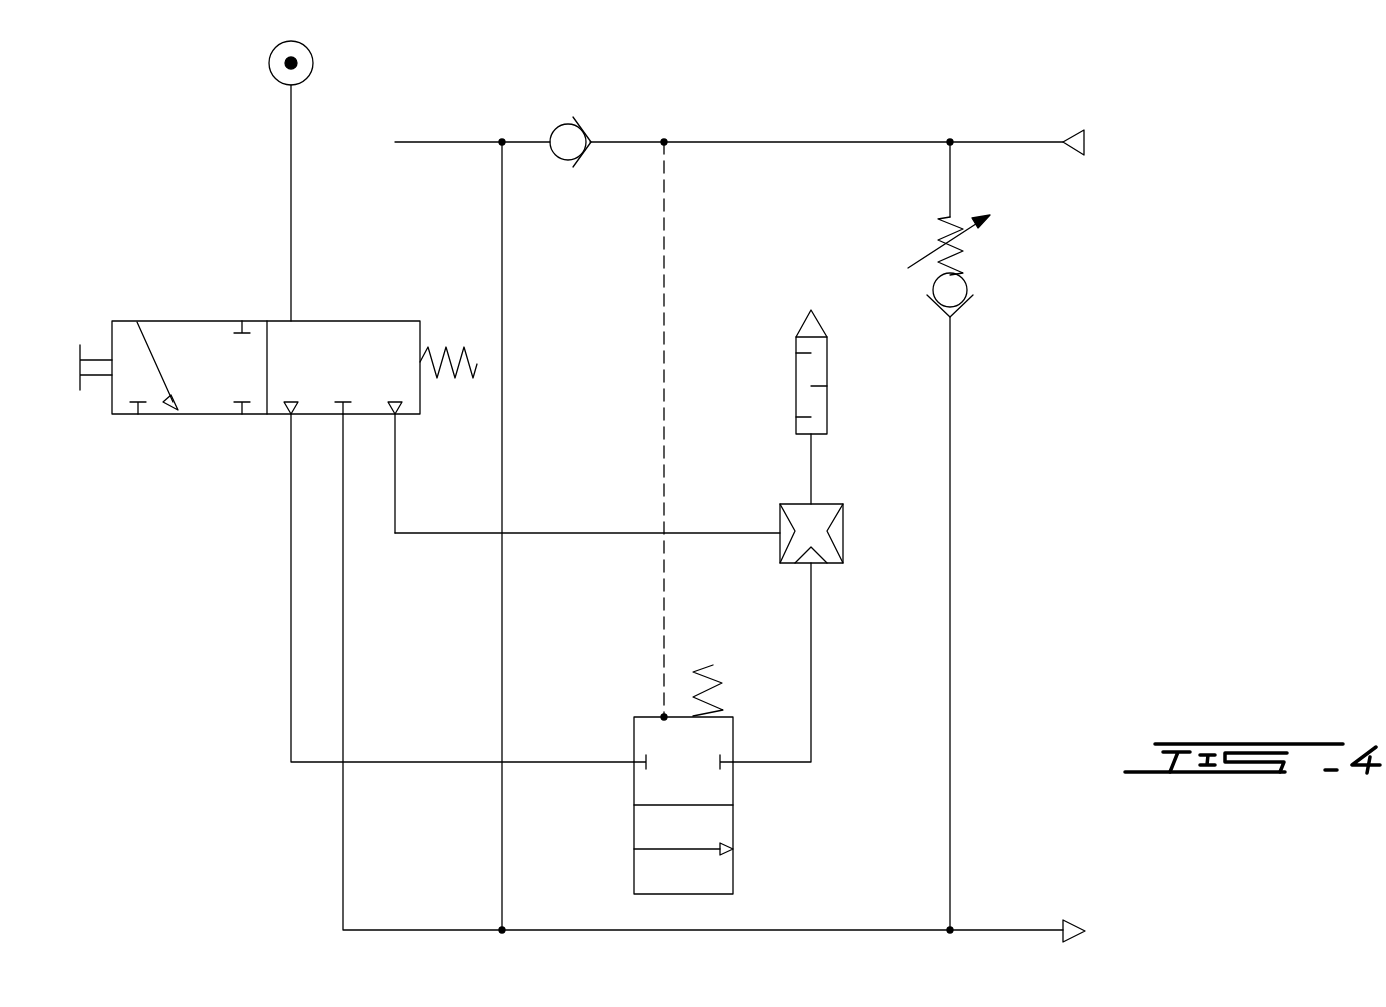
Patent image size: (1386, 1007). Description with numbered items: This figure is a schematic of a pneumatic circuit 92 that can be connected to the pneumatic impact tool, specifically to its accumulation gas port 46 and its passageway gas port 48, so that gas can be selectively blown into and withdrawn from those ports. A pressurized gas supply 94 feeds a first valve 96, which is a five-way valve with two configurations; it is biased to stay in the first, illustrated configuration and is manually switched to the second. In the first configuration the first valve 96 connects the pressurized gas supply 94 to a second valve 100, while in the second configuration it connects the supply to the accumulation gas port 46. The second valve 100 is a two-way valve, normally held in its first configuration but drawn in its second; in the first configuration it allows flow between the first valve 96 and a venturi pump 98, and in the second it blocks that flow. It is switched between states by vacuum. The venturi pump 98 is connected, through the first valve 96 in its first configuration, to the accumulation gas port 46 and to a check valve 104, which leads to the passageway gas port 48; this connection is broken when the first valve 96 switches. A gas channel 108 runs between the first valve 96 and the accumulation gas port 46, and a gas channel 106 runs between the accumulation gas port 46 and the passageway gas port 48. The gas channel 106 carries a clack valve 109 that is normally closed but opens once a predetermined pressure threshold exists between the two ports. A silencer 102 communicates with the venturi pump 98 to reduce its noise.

The pneumatic circuit 92 is at (860, 127).
The pressurized gas supply 94 is at (313, 63).
The first valve 96 is at (190, 321).
The check valve 104 is at (556, 127).
The passageway gas port 48 is at (1084, 142).
The gas channel 106 is at (951, 655).
The clack valve 109 is at (968, 280).
The silencer 102 is at (827, 377).
The venturi pump 98 is at (843, 523).
The gas channel 108 is at (502, 628).
The second valve 100 is at (733, 825).
The accumulation gas port 46 is at (1077, 926).